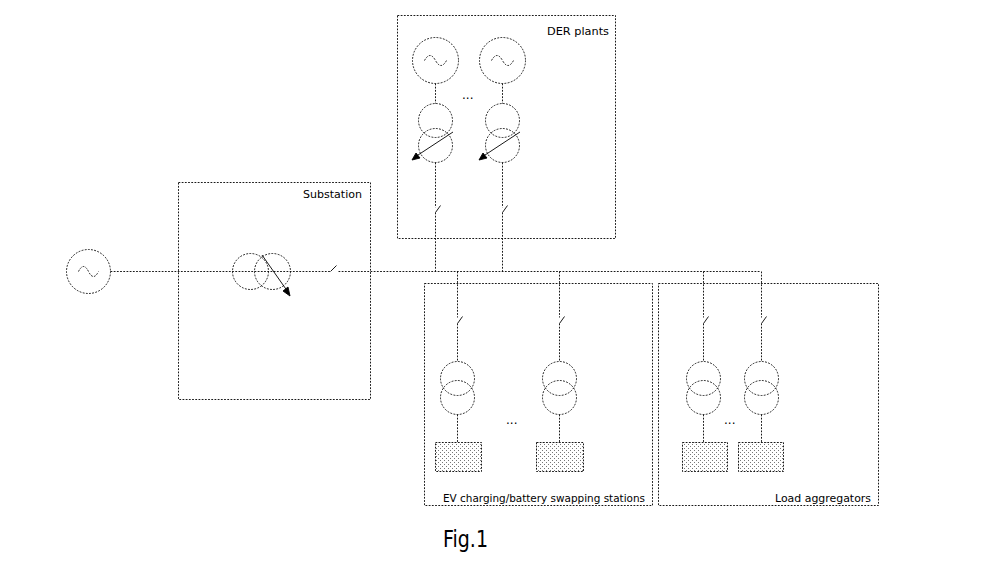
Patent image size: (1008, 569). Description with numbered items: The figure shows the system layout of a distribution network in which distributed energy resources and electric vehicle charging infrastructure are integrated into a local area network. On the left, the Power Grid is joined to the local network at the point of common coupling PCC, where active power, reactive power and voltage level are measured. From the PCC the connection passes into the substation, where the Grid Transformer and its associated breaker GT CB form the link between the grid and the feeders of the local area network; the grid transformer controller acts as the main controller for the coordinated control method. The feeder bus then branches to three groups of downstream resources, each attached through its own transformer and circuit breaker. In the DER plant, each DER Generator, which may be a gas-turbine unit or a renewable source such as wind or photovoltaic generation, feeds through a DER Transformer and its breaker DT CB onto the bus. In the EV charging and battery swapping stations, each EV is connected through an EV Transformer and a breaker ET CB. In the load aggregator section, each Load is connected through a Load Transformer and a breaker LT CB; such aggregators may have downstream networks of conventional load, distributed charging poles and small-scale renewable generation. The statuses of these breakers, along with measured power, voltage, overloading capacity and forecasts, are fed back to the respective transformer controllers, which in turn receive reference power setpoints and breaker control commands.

The power grid Power Grid is at (88, 279).
The point of common coupling PCC is at (134, 270).
The grid transformer Grid Transformer is at (257, 286).
The grid transformer circuit breaker GT CB is at (327, 260).
The DER generator DER Generator is at (505, 61).
The DER transformer DER Transformer is at (510, 133).
The DER transformer circuit breaker DT CB is at (501, 206).
The EV transformer circuit breaker ET CB is at (540, 322).
The EV transformer EV Transformer is at (546, 388).
The EV station EV is at (510, 457).
The load transformer circuit breaker LT CB is at (757, 322).
The load transformer Load Transformer is at (769, 388).
The load aggregator Load is at (733, 457).